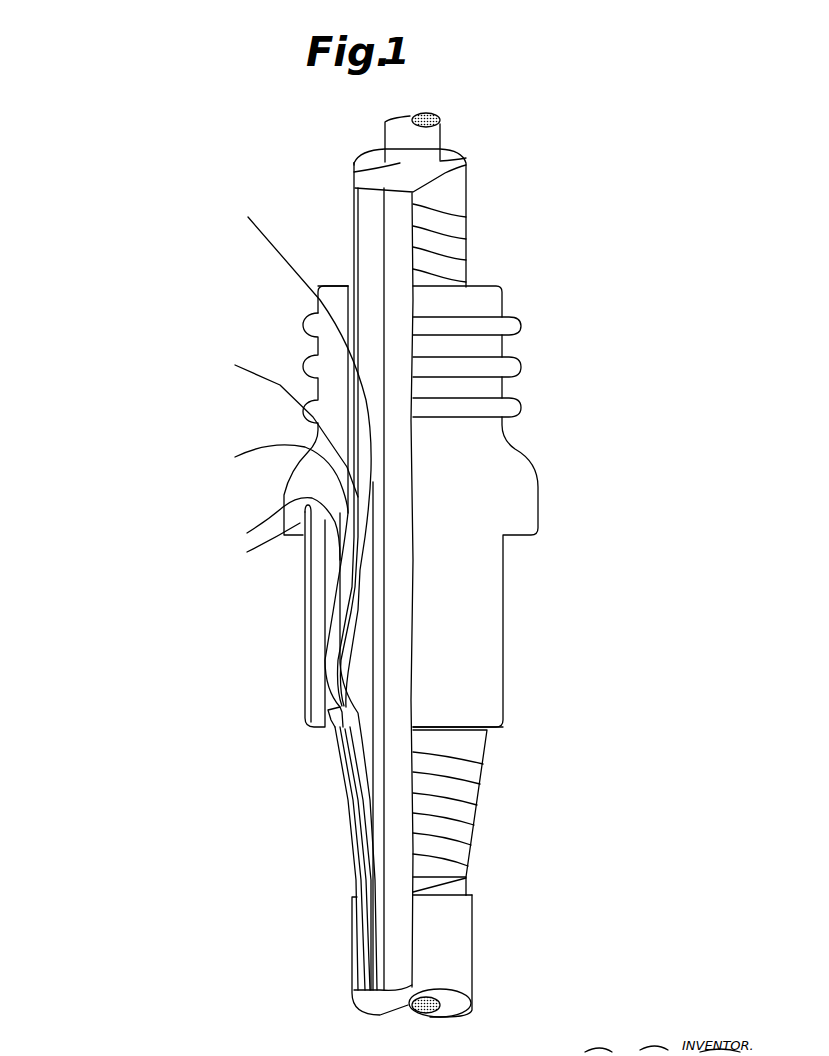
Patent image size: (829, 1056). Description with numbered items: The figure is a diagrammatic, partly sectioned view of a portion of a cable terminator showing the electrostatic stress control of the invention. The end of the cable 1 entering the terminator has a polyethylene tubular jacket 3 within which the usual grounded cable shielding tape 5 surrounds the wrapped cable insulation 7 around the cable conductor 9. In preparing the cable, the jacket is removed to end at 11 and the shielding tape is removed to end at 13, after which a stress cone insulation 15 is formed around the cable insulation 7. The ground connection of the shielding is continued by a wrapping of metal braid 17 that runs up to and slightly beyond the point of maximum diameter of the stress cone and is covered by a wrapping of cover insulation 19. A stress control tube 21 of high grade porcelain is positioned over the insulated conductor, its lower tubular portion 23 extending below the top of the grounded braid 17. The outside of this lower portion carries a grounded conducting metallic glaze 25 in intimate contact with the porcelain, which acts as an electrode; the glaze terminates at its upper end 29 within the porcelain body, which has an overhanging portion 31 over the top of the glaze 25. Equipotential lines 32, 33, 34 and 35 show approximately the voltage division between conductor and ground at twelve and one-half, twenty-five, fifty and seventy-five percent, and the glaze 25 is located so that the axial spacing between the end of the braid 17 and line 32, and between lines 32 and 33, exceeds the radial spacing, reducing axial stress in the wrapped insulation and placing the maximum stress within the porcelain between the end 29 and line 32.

The end of cable 1 is at (317, 950).
The tubular jacket 3 is at (473, 972).
The grounded cable shielding tape 5 is at (465, 888).
The wrapped cable insulation 7 is at (467, 226).
The cable conductor 9 is at (440, 132).
The end of jacket 11 is at (446, 898).
The end of shielding tape 13 is at (440, 877).
The stress cone insulation 15 is at (478, 800).
The metal braid 17 is at (352, 842).
The cover insulation 19 is at (332, 747).
The stress control tube 21 is at (521, 322).
The lower tubular portion 23 is at (500, 727).
The conducting metallic glaze 25 is at (307, 617).
The upper end of conducting glaze 29 is at (297, 537).
The overhanging portion 31 is at (261, 547).
The equipotential line 32 is at (203, 493).
The equipotential line 33 is at (222, 455).
The equipotential line 34 is at (262, 297).
The equipotential line 35 is at (277, 280).